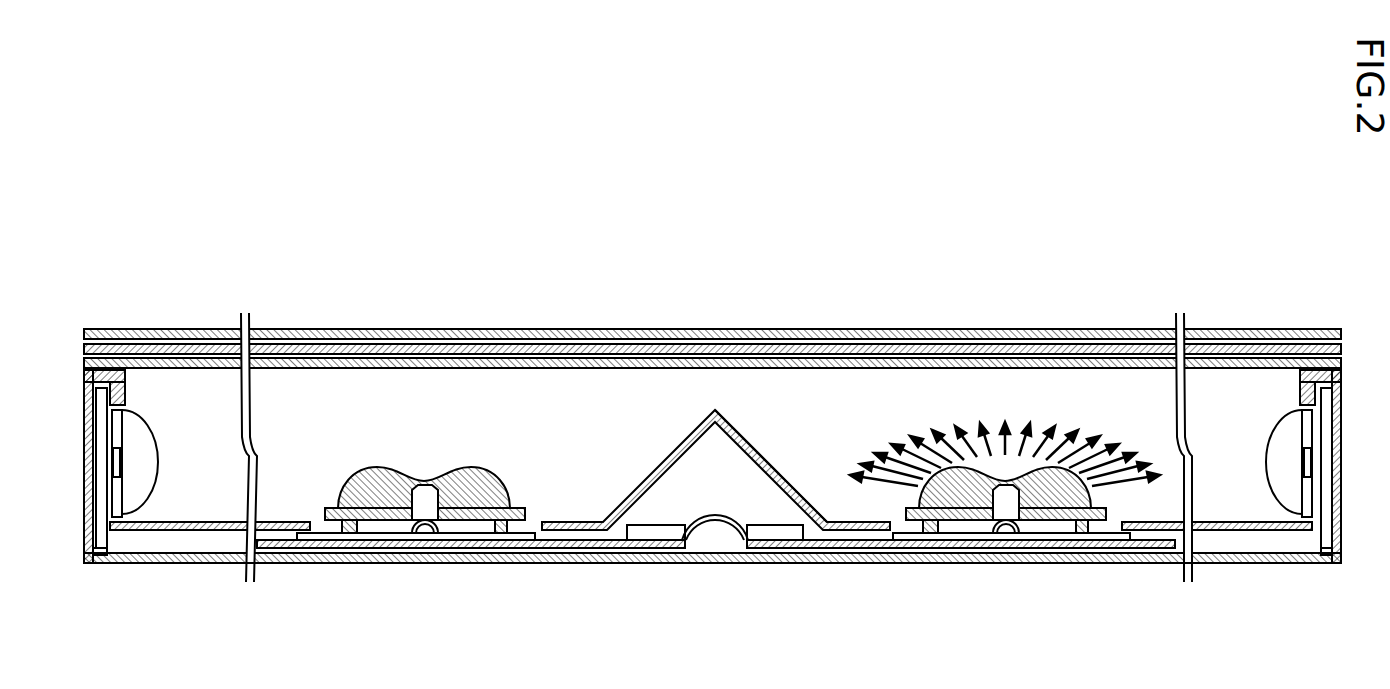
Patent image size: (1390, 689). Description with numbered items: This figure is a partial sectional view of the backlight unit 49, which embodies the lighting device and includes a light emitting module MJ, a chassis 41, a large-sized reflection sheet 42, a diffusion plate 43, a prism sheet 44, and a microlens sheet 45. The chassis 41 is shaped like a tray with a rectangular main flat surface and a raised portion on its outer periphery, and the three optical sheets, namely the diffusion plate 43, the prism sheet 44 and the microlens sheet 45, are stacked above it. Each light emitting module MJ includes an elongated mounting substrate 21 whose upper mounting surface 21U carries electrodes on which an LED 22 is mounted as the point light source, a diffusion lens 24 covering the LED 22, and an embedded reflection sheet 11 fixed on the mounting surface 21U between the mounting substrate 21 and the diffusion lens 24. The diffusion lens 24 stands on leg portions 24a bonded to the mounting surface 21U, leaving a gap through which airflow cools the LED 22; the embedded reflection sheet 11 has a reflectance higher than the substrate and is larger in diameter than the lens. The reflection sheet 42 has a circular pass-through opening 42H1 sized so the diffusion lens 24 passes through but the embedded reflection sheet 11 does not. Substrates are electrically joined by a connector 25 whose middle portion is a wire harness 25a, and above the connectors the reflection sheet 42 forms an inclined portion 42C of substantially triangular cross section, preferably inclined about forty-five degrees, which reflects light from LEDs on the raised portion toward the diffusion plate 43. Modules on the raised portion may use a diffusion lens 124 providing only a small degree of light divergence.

The embedded reflection sheet 11 is at (111, 560).
The mounting substrate 21 is at (563, 548).
The mounting surface 21U is at (287, 540).
The LED 22 is at (91, 556).
The diffusion lens 24 is at (378, 467).
The leg portions 24a is at (307, 540).
The connector 25 is at (648, 525).
The wire harness 25a is at (712, 514).
The chassis 41 is at (713, 563).
The reflection sheet 42 is at (563, 522).
The inclined portion 42C is at (777, 470).
The pass-through opening 42H1 is at (1122, 526).
The diffusion plate 43 is at (923, 366).
The prism sheet 44 is at (998, 352).
The microlens sheet 45 is at (1075, 330).
The backlight unit 49 is at (712, 297).
The diffusion lens 124 is at (152, 512).
The light emitting module MJ is at (430, 458).